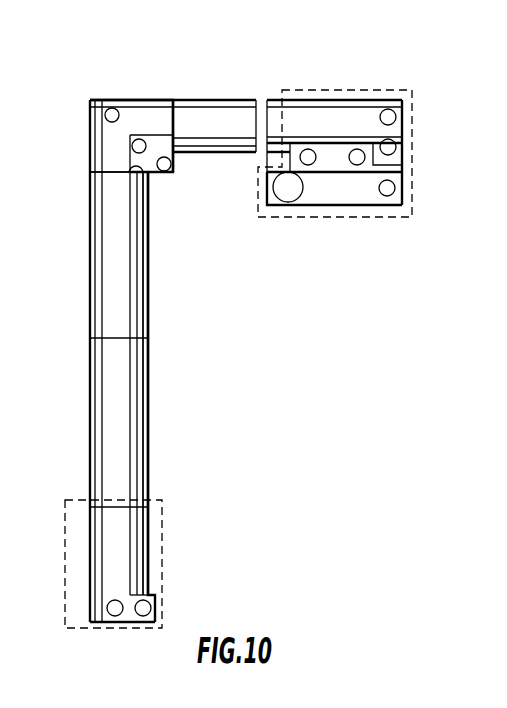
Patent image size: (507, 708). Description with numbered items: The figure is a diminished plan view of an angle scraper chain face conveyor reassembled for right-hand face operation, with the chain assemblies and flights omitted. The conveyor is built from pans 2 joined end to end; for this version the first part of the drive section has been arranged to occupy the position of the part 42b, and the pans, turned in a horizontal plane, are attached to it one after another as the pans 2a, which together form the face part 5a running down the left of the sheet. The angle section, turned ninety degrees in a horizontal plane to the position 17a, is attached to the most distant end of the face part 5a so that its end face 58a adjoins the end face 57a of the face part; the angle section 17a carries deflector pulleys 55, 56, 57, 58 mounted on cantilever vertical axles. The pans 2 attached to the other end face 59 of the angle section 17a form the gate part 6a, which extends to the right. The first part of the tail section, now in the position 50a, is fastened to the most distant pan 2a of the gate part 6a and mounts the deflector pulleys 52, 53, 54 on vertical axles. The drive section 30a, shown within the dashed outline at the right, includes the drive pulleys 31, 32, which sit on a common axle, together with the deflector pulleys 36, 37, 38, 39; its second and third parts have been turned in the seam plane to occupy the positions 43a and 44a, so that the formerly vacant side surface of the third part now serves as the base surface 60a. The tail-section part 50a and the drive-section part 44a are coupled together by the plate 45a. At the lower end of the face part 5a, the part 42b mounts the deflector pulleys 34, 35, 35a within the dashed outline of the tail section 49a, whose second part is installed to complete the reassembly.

The pans 2 is at (222, 120).
The pans in turned position 2a is at (117, 458).
The face part 5a is at (86, 298).
The gate part 6a is at (203, 97).
The angle section in turned position 17a is at (145, 117).
The drive section 30a is at (405, 221).
The drive pulley 31 is at (266, 217).
The drive pulley 32 is at (280, 193).
The deflector pulley 34 is at (152, 608).
The deflector pulley 35 is at (64, 592).
The deflector pulley 35a is at (108, 602).
The deflector pulley 36 is at (376, 196).
The deflector pulley 37 is at (396, 190).
The deflector pulley 38 is at (375, 187).
The deflector pulley 39 is at (303, 150).
The first part of drive section in repositioned state 42b is at (115, 558).
The second part of drive section in repositioned state 43a is at (335, 163).
The third part of drive section in repositioned state 44a is at (357, 166).
The plate 45a is at (398, 165).
The tail section 49a is at (177, 487).
The first part of tail section in repositioned state 50a is at (355, 128).
The deflector pulley 52 is at (395, 110).
The deflector pulley 53 is at (430, 135).
The deflector pulley 54 is at (402, 140).
The deflector pulley 55 is at (108, 108).
The deflector pulley 56 is at (132, 144).
The deflector pulley 57 is at (198, 180).
The deflector pulley 58 is at (171, 167).
The end face of face part 57a is at (144, 538).
The end face of angle section 58a is at (140, 176).
The end face of angle section 59 is at (172, 113).
The base surface 60a is at (320, 172).